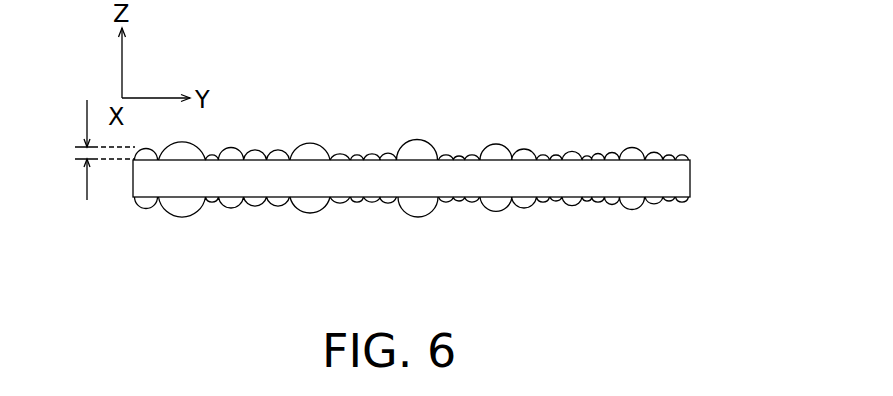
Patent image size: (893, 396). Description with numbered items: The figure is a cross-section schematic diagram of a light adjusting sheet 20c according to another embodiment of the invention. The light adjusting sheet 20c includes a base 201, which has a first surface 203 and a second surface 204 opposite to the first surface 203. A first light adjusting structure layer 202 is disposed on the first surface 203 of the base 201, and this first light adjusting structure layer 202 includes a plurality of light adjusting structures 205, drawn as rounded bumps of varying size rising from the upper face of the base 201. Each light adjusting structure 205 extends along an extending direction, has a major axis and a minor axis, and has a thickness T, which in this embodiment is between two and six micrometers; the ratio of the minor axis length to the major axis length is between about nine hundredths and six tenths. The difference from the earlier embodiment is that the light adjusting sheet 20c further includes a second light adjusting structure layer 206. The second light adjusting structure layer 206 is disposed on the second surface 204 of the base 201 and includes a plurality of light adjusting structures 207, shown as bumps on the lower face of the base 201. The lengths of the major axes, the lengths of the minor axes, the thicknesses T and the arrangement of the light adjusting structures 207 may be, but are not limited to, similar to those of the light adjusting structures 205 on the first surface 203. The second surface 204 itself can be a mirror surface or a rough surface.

The light adjusting sheet 20c is at (455, 160).
The base 201 is at (682, 177).
The first light adjusting structure layer 202 is at (446, 117).
The first surface 203 is at (283, 162).
The second surface 204 is at (318, 185).
The light adjusting structure 205 is at (421, 150).
The second light adjusting structure layer 206 is at (446, 227).
The light adjusting structure 207 is at (418, 208).
The thickness T is at (93, 150).